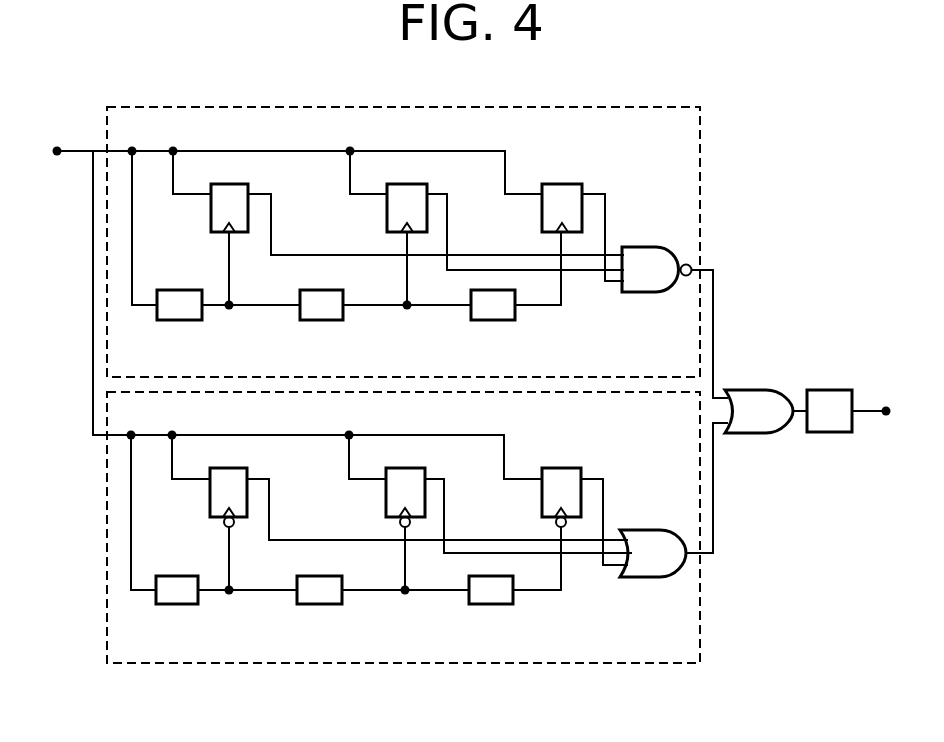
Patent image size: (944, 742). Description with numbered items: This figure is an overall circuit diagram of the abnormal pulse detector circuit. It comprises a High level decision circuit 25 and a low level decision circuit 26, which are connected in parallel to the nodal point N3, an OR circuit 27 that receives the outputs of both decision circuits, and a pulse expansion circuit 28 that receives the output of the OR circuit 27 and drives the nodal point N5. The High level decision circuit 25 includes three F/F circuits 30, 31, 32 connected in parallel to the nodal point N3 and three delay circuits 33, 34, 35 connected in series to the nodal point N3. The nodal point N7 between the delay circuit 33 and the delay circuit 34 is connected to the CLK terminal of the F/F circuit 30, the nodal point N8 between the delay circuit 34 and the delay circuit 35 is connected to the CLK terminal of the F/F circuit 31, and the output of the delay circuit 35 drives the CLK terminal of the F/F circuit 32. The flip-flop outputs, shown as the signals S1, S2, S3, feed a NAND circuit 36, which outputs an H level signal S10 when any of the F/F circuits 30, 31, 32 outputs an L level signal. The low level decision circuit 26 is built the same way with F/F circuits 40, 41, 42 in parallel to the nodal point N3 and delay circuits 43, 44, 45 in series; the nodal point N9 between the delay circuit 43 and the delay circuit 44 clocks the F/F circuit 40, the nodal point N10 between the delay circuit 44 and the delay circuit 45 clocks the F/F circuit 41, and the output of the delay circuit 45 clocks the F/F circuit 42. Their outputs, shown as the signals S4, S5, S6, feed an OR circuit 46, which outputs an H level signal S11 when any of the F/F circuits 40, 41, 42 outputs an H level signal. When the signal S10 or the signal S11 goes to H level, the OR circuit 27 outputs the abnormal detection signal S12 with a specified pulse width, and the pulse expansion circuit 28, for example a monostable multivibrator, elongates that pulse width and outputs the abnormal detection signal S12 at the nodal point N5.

The High level decision circuit 25 is at (700, 165).
The low level decision circuit 26 is at (700, 605).
The OR circuit 27 is at (752, 391).
The pulse expansion circuit 28 is at (830, 390).
The F/F circuit 30 is at (228, 184).
The F/F circuit 31 is at (402, 184).
The F/F circuit 32 is at (562, 184).
The delay circuit 33 is at (178, 290).
The delay circuit 34 is at (323, 320).
The delay circuit 35 is at (495, 320).
The NAND circuit 36 is at (645, 247).
The F/F circuit 40 is at (228, 468).
The F/F circuit 41 is at (403, 468).
The F/F circuit 42 is at (560, 468).
The delay circuit 43 is at (178, 576).
The delay circuit 44 is at (322, 604).
The delay circuit 45 is at (495, 604).
The OR circuit 46 is at (648, 530).
The nodal point N3 is at (290, 353).
The nodal point N5 is at (879, 397).
The nodal point N7 is at (251, 285).
The nodal point N8 is at (407, 285).
The nodal point N9 is at (247, 576).
The nodal point N10 is at (405, 575).
The signal S1 is at (258, 194).
The signal S2 is at (440, 194).
The signal S3 is at (590, 194).
The signal S4 is at (279, 541).
The signal S5 is at (545, 554).
The signal S6 is at (612, 566).
The H level signal S10 is at (713, 310).
The H level signal S11 is at (713, 515).
The abnormal detection signal S12 is at (862, 433).